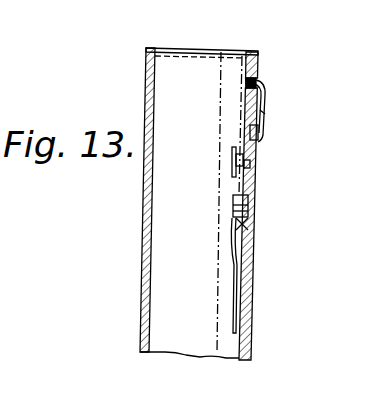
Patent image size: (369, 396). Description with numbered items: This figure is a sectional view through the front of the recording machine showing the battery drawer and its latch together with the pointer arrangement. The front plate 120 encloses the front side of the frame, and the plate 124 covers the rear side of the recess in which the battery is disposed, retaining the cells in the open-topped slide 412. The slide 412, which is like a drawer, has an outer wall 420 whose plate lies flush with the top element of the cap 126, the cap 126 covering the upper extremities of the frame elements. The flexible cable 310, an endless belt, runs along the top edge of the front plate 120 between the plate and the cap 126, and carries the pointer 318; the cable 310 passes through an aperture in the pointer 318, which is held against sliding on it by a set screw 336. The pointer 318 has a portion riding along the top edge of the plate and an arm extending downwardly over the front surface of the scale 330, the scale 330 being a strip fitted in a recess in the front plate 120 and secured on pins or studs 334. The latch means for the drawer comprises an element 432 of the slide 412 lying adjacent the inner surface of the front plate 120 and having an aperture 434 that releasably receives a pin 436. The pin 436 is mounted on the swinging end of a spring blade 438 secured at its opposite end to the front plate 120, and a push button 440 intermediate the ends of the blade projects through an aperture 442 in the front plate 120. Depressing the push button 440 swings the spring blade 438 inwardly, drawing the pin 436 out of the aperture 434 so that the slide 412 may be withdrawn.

The outer wall 420 is at (170, 48).
The cap 126 is at (258, 54).
The flexible cable 310 is at (245, 86).
The set screw 336 is at (260, 87).
The scale 330 is at (262, 108).
The pointer 318 is at (265, 113).
The element 432 is at (240, 108).
The pins or studs 334 is at (261, 138).
The pin 436 is at (232, 160).
The aperture 434 is at (252, 165).
The push button 440 is at (253, 198).
The aperture 442 is at (251, 219).
The spring blade 438 is at (233, 238).
The front plate 120 is at (251, 262).
The plate 124 is at (143, 282).
The slide 412 is at (218, 313).